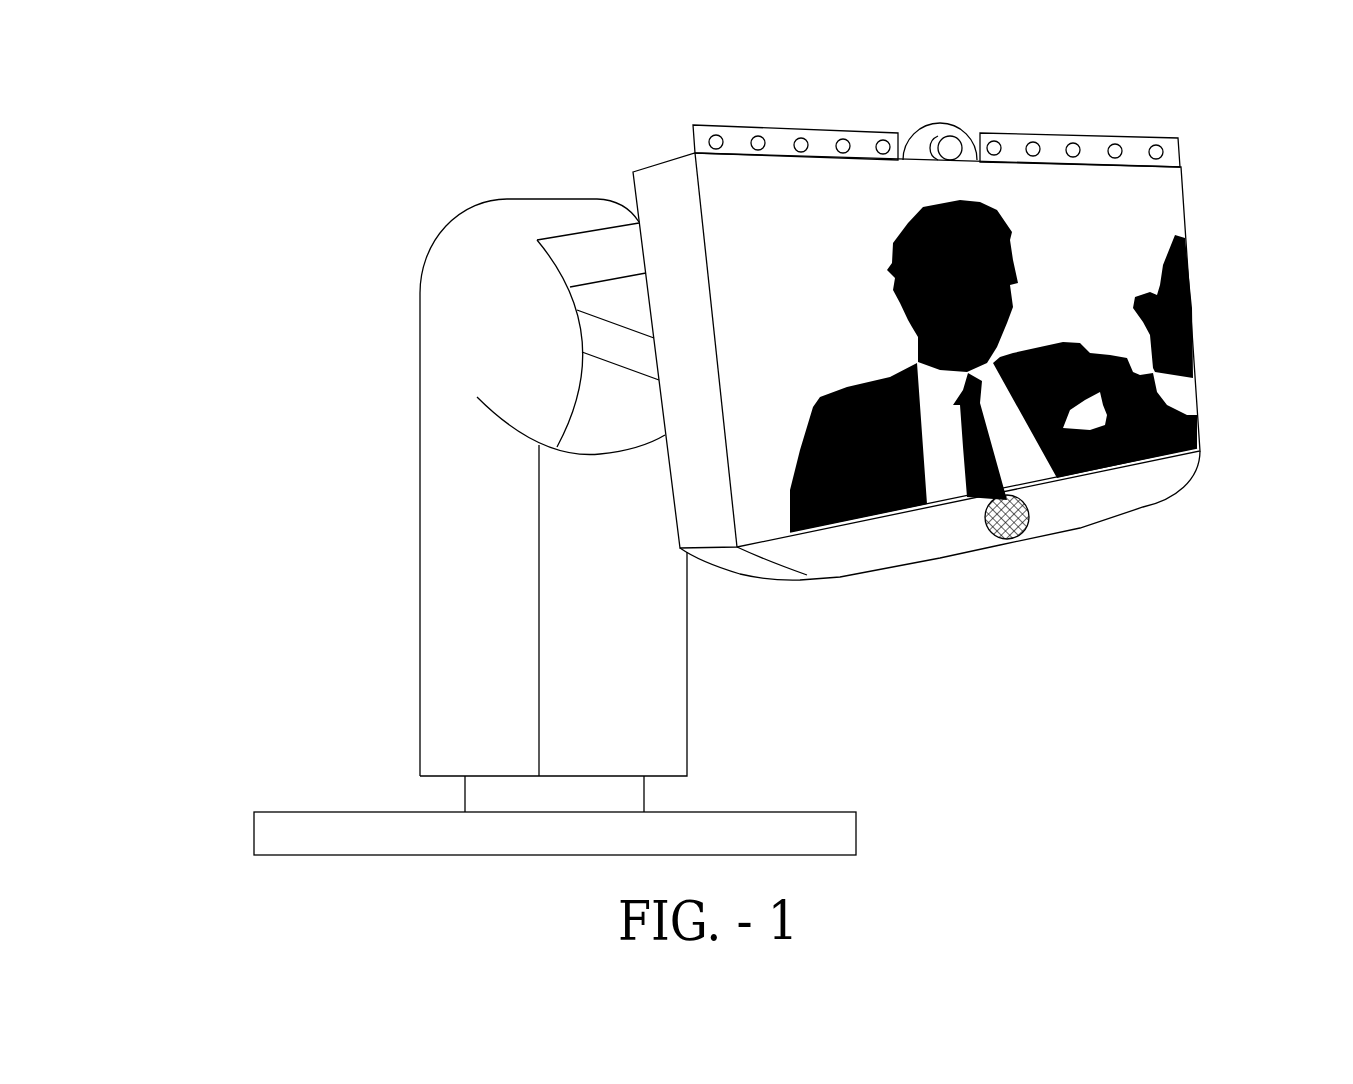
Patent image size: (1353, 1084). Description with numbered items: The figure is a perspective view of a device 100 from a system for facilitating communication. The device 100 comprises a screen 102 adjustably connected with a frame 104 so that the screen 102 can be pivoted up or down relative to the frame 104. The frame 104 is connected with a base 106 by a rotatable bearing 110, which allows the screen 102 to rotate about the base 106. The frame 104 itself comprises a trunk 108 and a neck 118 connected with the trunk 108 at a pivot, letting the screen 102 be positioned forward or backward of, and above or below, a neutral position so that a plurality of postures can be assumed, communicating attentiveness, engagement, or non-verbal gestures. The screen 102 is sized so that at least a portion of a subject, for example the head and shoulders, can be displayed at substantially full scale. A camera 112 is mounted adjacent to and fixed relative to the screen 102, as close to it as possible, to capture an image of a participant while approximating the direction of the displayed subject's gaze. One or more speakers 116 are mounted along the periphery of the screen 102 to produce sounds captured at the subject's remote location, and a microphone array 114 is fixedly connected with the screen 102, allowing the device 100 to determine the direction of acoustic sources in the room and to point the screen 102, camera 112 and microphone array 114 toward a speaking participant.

The device 100 is at (305, 203).
The screen 102 is at (966, 361).
The frame 104 is at (430, 418).
The base 106 is at (306, 823).
The trunk 108 is at (447, 592).
The rotatable bearing 110 is at (633, 797).
The camera 112 is at (922, 127).
The microphone array 114 is at (1063, 133).
The speakers 116 is at (1008, 540).
The neck 118 is at (605, 290).